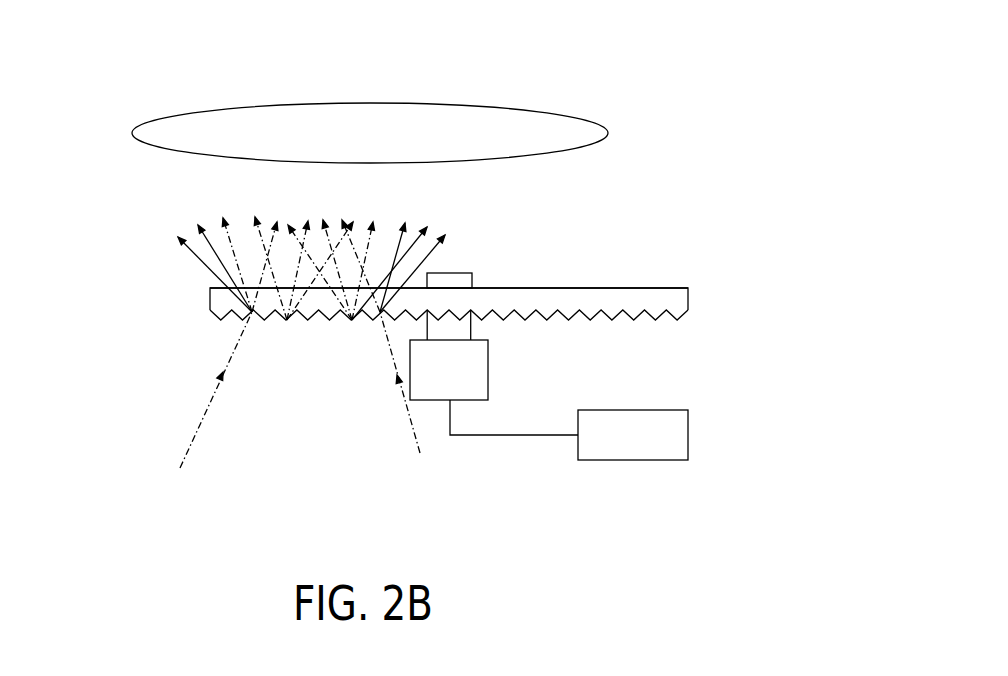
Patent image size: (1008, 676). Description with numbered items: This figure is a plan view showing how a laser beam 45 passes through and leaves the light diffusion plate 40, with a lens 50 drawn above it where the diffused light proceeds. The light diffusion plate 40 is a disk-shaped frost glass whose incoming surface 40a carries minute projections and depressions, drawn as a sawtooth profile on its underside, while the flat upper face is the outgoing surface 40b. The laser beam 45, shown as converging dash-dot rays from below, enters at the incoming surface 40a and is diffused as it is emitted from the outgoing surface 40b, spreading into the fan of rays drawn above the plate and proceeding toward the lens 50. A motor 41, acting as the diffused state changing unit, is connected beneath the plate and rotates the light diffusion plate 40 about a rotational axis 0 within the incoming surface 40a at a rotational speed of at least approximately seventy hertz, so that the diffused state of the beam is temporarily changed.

The lens 50 is at (585, 120).
The light diffusion plate 40 is at (486, 298).
The incoming surface 40a is at (640, 318).
The outgoing surface 40b is at (617, 288).
The rotational axis 0 is at (452, 273).
The motor 41 is at (688, 433).
The laser beam 45 is at (192, 440).